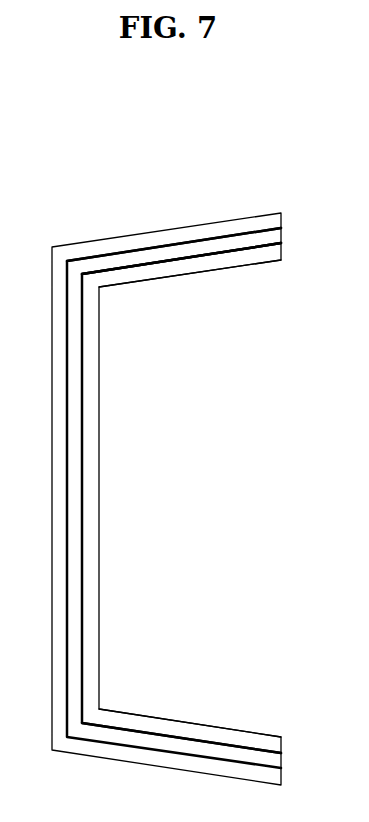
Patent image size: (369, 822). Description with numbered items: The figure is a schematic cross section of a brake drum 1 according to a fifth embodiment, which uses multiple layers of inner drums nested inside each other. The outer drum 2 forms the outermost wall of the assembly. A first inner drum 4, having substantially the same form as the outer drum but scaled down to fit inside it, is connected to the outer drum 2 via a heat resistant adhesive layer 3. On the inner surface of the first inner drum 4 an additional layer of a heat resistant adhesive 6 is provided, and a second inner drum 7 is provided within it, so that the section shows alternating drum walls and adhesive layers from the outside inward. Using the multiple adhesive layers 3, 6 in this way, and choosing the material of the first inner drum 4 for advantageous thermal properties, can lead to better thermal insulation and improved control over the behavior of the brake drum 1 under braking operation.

The brake drum 1 is at (101, 213).
The outer drum 2 is at (203, 729).
The heat resistant adhesive layer 3 is at (67, 538).
The first inner drum 4 is at (210, 248).
The heat resistant adhesive layer 6 is at (83, 466).
The second inner drum 7 is at (136, 274).